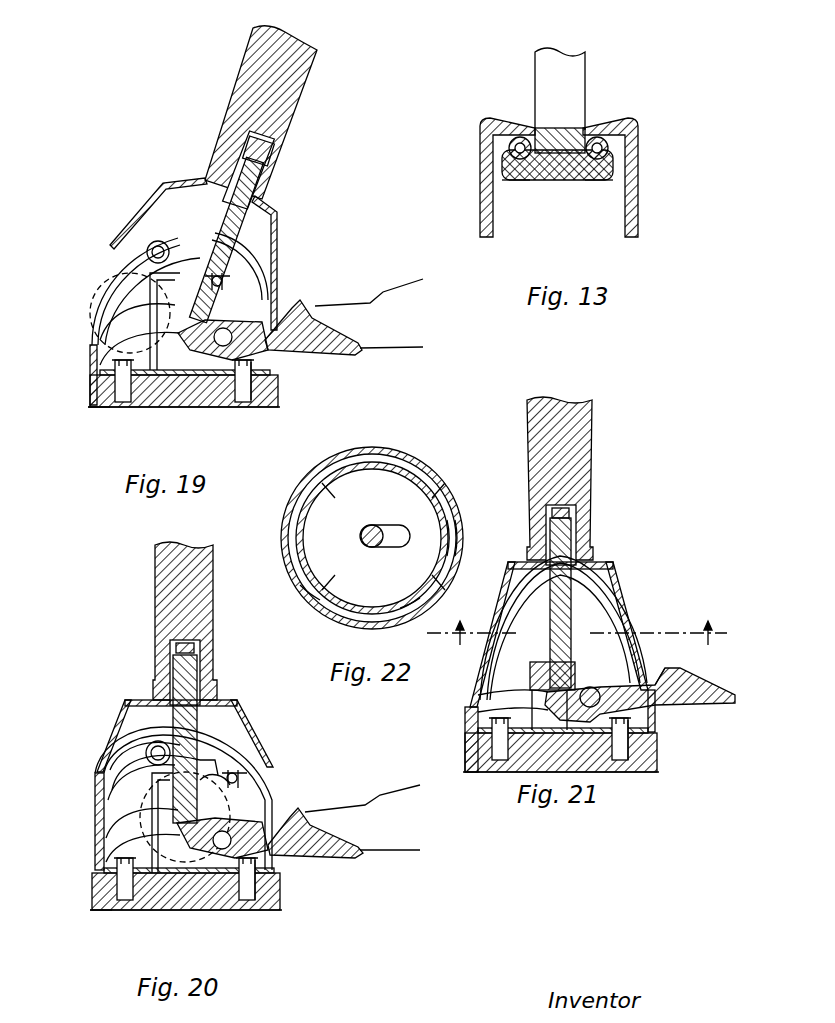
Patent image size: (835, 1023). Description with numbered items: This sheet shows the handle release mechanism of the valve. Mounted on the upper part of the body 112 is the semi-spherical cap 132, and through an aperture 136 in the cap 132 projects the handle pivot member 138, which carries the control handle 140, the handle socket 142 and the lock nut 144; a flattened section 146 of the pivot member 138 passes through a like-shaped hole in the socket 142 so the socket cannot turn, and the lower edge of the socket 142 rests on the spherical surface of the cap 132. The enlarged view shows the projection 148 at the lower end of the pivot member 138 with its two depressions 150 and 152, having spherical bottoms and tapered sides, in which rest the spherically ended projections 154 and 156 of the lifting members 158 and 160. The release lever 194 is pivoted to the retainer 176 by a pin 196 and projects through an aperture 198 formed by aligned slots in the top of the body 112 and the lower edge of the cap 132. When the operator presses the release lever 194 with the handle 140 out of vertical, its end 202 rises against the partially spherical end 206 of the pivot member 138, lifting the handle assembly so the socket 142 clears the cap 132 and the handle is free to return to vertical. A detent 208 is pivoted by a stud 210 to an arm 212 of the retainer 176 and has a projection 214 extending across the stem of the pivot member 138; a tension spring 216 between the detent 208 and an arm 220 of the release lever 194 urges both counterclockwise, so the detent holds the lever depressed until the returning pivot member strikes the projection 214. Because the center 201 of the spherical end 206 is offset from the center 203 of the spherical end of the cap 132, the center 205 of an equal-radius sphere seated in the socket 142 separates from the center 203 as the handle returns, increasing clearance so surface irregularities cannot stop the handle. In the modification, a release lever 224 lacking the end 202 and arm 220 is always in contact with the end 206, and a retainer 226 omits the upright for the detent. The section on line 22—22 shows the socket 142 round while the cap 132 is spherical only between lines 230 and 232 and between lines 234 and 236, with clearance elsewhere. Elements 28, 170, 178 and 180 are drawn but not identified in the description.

In FIG. 21, the line 22— 22 is at (581, 623).
In FIG. 20, the spring 28 is at (121, 766).
In FIG. 19, the body 112 is at (280, 395).
In FIG. 20, the body 112 is at (282, 882).
In FIG. 21, the body 112 is at (657, 735).
In FIG. 19, the semi-spherical cap 132 is at (108, 278).
In FIG. 20, the semi-spherical cap 132 is at (266, 750).
In FIG. 21, the semi-spherical cap 132 is at (470, 680).
In FIG. 22, the semi-spherical cap 132 is at (463, 540).
In FIG. 19, the aperture 136 is at (187, 204).
In FIG. 21, the aperture 136 is at (600, 600).
In FIG. 22, the aperture 136 is at (415, 514).
In FIG. 13, the handle pivot member 138 is at (577, 108).
In FIG. 19, the handle pivot member 138 is at (272, 178).
In FIG. 20, the handle pivot member 138 is at (200, 662).
In FIG. 21, the handle pivot member 138 is at (592, 590).
In FIG. 22, the handle pivot member 138 is at (366, 527).
In FIG. 19, the control handle 140 is at (291, 116).
In FIG. 20, the control handle 140 is at (205, 612).
In FIG. 21, the control handle 140 is at (585, 455).
In FIG. 19, the handle socket 142 is at (279, 250).
In FIG. 20, the handle socket 142 is at (258, 730).
In FIG. 21, the handle socket 142 is at (642, 628).
In FIG. 22, the handle socket 142 is at (452, 494).
In FIG. 19, the lock nut 144 is at (262, 208).
In FIG. 20, the lock nut 144 is at (230, 702).
In FIG. 21, the lock nut 144 is at (600, 562).
In FIG. 19, the flattened section 146 is at (270, 197).
In FIG. 20, the flattened section 146 is at (205, 682).
In FIG. 21, the flattened section 146 is at (580, 530).
In FIG. 13, the projection 148 is at (555, 180).
In FIG. 19, the projection 148 is at (150, 292).
In FIG. 20, the projection 148 is at (150, 808).
In FIG. 21, the projection 148 is at (530, 672).
In FIG. 13, the depression 150 is at (594, 182).
In FIG. 13, the depression 152 is at (525, 182).
In FIG. 13, the spherically ended projection 154 is at (605, 138).
In FIG. 13, the spherically ended projection 156 is at (515, 138).
In FIG. 13, the lifting member 158 is at (638, 212).
In FIG. 13, the lifting member 160 is at (480, 212).
In FIG. 19, the screw 170 is at (243, 408).
In FIG. 20, the screw 170 is at (252, 912).
In FIG. 19, the retainer 176 is at (100, 373).
In FIG. 20, the retainer 176 is at (104, 873).
In FIG. 21, the retainer 176 is at (505, 773).
In FIG. 19, the base edge 178 is at (110, 408).
In FIG. 20, the base edge 178 is at (108, 911).
In FIG. 21, the base edge 178 is at (470, 765).
In FIG. 19, the screw hole 180 is at (252, 409).
In FIG. 20, the screw hole 180 is at (270, 902).
In FIG. 21, the screw hole 180 is at (655, 760).
In FIG. 19, the release lever 194 is at (310, 350).
In FIG. 20, the release lever 194 is at (280, 818).
In FIG. 19, the pin 196 is at (235, 345).
In FIG. 20, the pin 196 is at (235, 850).
In FIG. 21, the pin 196 is at (592, 688).
In FIG. 19, the aperture 198 is at (292, 316).
In FIG. 20, the aperture 198 is at (310, 808).
In FIG. 21, the aperture 198 is at (662, 676).
In FIG. 20, the center of spherical end 201 is at (219, 757).
In FIG. 19, the end 202 is at (175, 333).
In FIG. 20, the end 202 is at (175, 848).
In FIG. 21, the end 202 is at (478, 712).
In FIG. 19, the center of spherical end of cap 203 is at (223, 323).
In FIG. 20, the center of spherical end of cap 203 is at (222, 831).
In FIG. 20, the center of sphere 205 is at (220, 791).
In FIG. 19, the partially spherical end 206 is at (140, 315).
In FIG. 20, the partially spherical end 206 is at (140, 833).
In FIG. 21, the partially spherical end 206 is at (478, 695).
In FIG. 19, the detent 208 is at (100, 350).
In FIG. 20, the detent 208 is at (140, 778).
In FIG. 19, the stud 210 is at (150, 252).
In FIG. 20, the stud 210 is at (150, 752).
In FIG. 20, the arm 212 is at (125, 795).
In FIG. 19, the projection 214 is at (180, 408).
In FIG. 20, the projection 214 is at (185, 912).
In FIG. 19, the tension spring 216 is at (185, 235).
In FIG. 20, the tension spring 216 is at (235, 765).
In FIG. 19, the arm 220 is at (235, 280).
In FIG. 20, the arm 220 is at (250, 778).
In FIG. 21, the release lever 224 is at (690, 690).
In FIG. 21, the retainer 226 is at (615, 775).
In FIG. 22, the line 230 is at (310, 452).
In FIG. 22, the line 232 is at (432, 476).
In FIG. 22, the line 234 is at (312, 605).
In FIG. 22, the line 236 is at (435, 615).